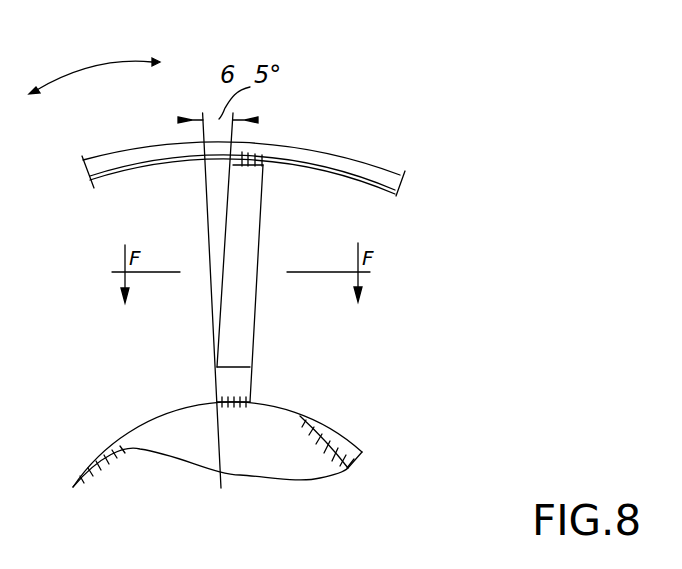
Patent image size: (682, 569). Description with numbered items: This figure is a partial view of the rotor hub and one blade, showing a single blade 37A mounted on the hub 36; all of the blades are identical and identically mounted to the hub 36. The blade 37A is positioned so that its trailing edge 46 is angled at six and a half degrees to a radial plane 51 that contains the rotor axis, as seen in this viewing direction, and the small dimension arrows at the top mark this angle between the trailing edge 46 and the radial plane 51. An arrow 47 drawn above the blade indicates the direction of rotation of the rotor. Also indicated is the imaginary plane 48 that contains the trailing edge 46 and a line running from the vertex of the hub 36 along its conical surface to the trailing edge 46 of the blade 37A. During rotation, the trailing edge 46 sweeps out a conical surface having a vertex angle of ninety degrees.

The arrow 47 is at (85, 67).
The imaginary plane 48 is at (232, 132).
The radial plane 51 is at (203, 188).
The trailing edge 46 is at (223, 283).
The blade 37A is at (253, 335).
The hub 36 is at (323, 430).